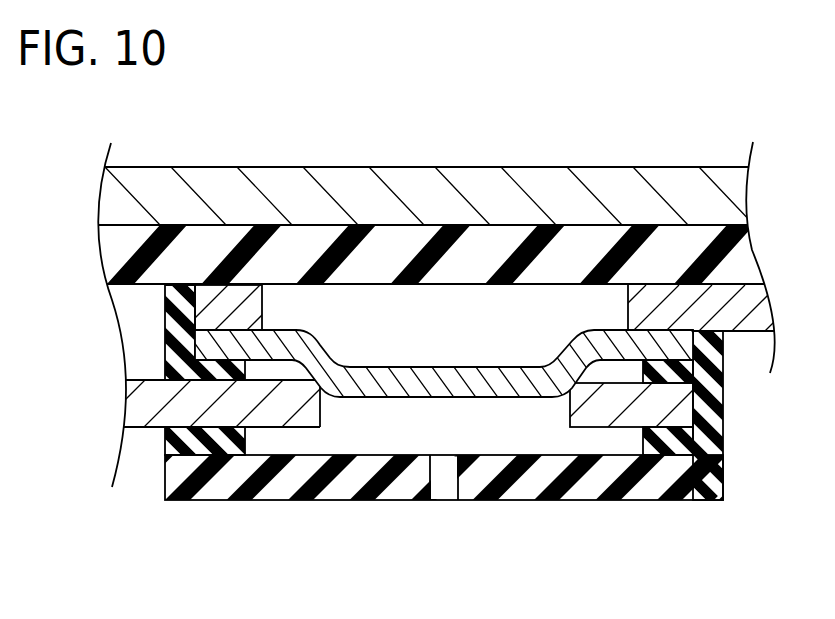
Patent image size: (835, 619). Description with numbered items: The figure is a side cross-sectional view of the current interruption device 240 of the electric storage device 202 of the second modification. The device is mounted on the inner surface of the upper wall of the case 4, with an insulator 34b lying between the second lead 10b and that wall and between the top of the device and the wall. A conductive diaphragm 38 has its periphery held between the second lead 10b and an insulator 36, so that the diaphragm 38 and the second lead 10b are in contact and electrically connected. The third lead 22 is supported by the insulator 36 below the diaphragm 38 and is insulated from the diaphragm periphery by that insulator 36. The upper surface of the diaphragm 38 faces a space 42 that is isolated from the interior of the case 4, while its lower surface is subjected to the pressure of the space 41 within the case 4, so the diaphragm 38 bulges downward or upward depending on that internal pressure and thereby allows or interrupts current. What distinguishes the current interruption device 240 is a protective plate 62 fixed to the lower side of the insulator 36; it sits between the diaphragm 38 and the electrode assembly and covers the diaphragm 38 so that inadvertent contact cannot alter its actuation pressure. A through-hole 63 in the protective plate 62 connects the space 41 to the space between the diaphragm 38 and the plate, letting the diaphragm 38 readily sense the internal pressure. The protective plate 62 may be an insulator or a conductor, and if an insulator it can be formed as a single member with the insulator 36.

The case 4 is at (483, 188).
The second lead 10b is at (225, 304).
The insulator 34b is at (405, 257).
The space 42 is at (536, 320).
The insulator 36 is at (225, 445).
The third lead 22 is at (277, 412).
The protective plate 62 is at (585, 488).
The through-hole 63 is at (458, 481).
The diaphragm 38 is at (493, 388).
The space 41 is at (547, 418).
The current interruption device 240 is at (345, 518).
The electric storage device 202 is at (807, 95).